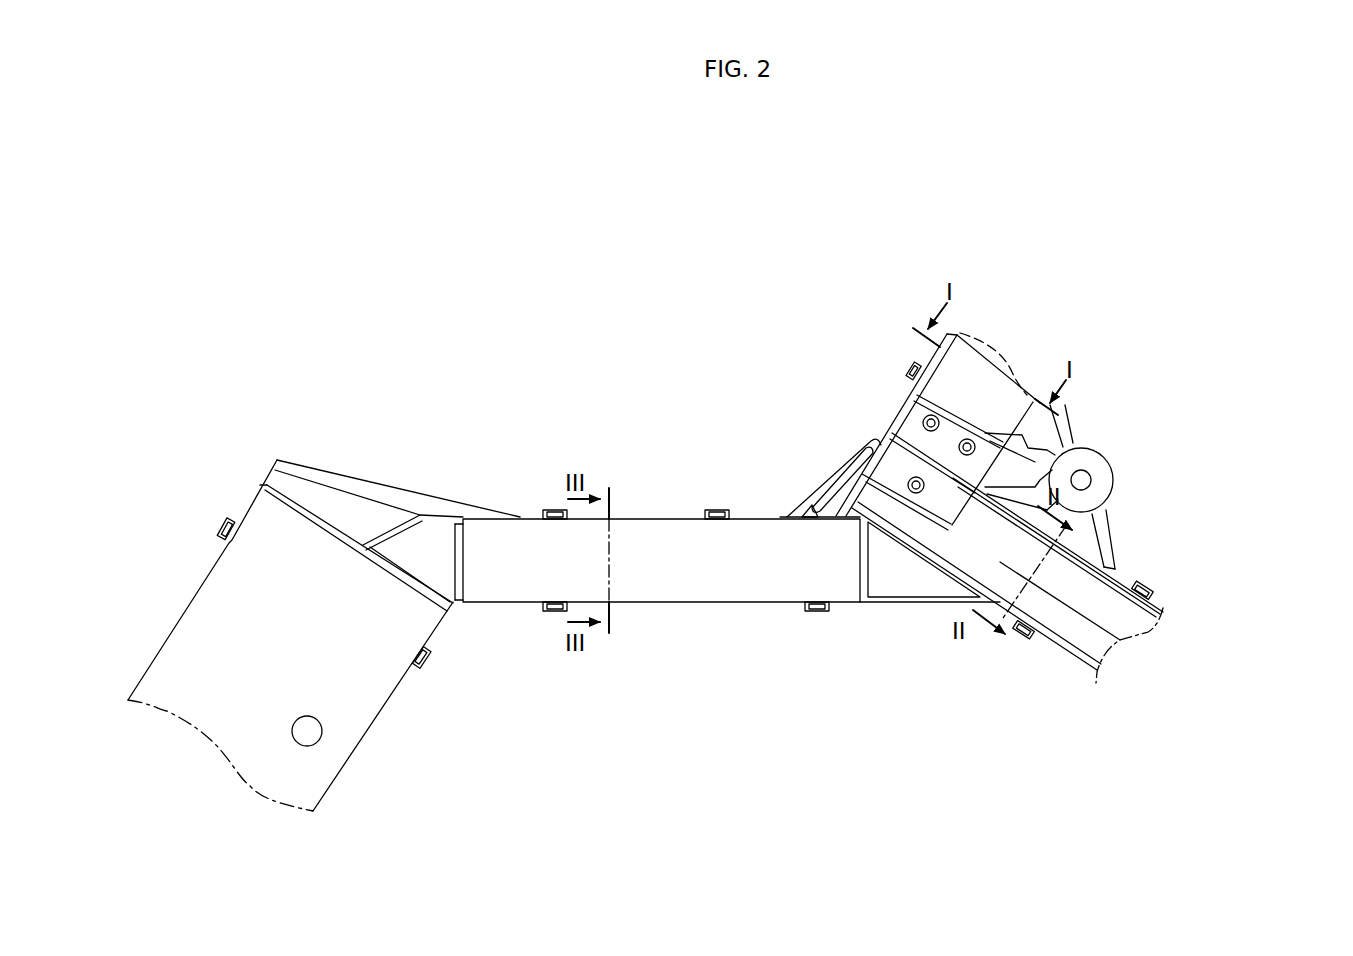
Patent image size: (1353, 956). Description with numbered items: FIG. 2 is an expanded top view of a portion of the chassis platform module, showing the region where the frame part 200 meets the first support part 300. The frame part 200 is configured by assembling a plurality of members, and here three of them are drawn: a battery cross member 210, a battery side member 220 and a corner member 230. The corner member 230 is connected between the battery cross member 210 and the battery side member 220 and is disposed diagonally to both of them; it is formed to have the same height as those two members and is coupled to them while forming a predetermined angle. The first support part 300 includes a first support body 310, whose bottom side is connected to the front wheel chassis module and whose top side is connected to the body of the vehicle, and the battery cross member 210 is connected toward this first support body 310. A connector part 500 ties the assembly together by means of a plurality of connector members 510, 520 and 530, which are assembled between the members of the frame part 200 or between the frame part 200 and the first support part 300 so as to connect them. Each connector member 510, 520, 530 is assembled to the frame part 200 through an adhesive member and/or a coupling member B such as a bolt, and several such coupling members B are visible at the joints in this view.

The frame part 200 is at (1198, 488).
The battery cross member 210 is at (1088, 603).
The battery side member 220 is at (357, 698).
The corner member 230 is at (661, 572).
The first support part 300 is at (868, 300).
The first support body 310 is at (972, 378).
The connector part 500 is at (880, 700).
The connector member 510 is at (903, 600).
The connector member 520 is at (835, 486).
The connector member 530 is at (387, 500).
The coupling member B is at (553, 510).